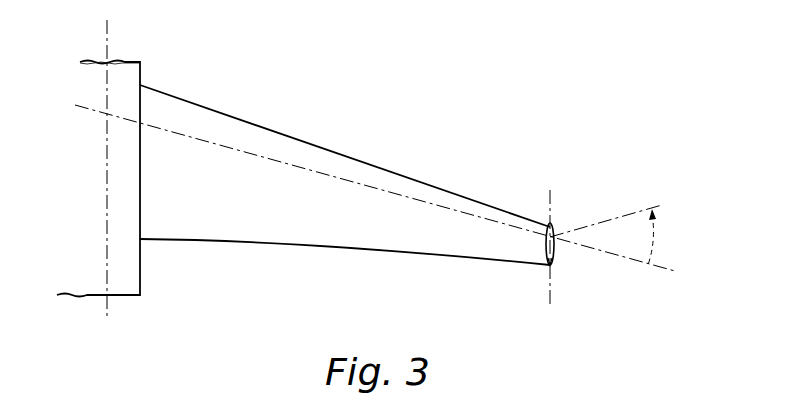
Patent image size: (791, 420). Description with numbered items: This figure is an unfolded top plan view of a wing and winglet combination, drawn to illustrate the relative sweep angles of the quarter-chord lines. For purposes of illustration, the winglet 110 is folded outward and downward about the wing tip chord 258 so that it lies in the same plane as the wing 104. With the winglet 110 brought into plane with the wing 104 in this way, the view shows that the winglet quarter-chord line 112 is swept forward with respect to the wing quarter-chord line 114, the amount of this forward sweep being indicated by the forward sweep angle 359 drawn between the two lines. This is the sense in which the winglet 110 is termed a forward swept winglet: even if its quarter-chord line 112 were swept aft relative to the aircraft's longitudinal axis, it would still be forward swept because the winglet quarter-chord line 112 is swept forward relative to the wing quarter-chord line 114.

The wing 104 is at (346, 250).
The wing quarter-chord line 114 is at (325, 171).
The winglet quarter-chord line 112 is at (558, 226).
The wing tip chord 258 is at (538, 266).
The winglet 110 is at (568, 250).
The forward sweep angle 359 is at (657, 239).